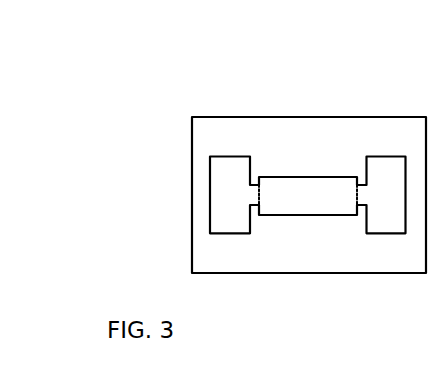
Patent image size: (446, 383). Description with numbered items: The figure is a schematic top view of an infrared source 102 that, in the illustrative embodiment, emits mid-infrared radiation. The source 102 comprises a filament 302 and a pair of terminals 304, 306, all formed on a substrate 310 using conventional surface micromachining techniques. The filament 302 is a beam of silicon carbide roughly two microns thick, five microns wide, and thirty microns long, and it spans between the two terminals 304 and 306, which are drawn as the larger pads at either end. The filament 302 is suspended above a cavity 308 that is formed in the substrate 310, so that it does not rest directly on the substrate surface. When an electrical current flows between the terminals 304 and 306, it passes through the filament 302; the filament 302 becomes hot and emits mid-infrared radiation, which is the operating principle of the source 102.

The source 102 is at (147, 70).
The filament 302 is at (297, 196).
The terminal 304 is at (220, 223).
The terminal 306 is at (395, 223).
The cavity 308 is at (289, 172).
The substrate 310 is at (383, 117).